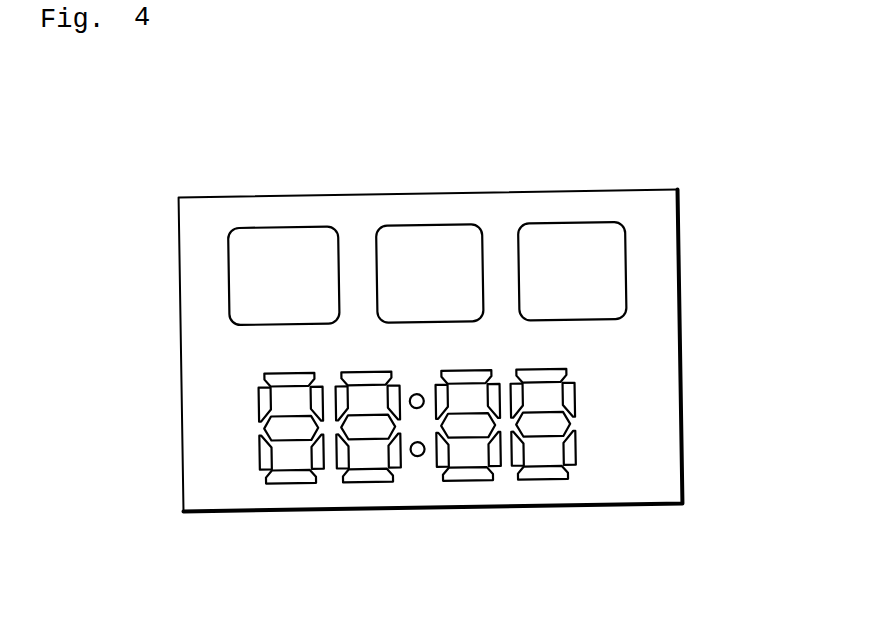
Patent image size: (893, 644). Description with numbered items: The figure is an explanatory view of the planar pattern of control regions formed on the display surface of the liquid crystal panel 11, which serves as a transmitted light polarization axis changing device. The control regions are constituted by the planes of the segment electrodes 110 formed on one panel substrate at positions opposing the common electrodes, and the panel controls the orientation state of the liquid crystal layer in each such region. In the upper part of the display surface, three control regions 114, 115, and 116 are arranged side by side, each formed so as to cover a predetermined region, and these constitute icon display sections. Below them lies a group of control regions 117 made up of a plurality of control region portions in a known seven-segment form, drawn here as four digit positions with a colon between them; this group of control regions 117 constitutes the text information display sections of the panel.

The liquid crystal panel 11 is at (680, 328).
The electrodes 110 is at (200, 305).
The control region 114 is at (270, 225).
The control region 115 is at (435, 223).
The control region 116 is at (578, 223).
The group of control regions 117 is at (407, 485).